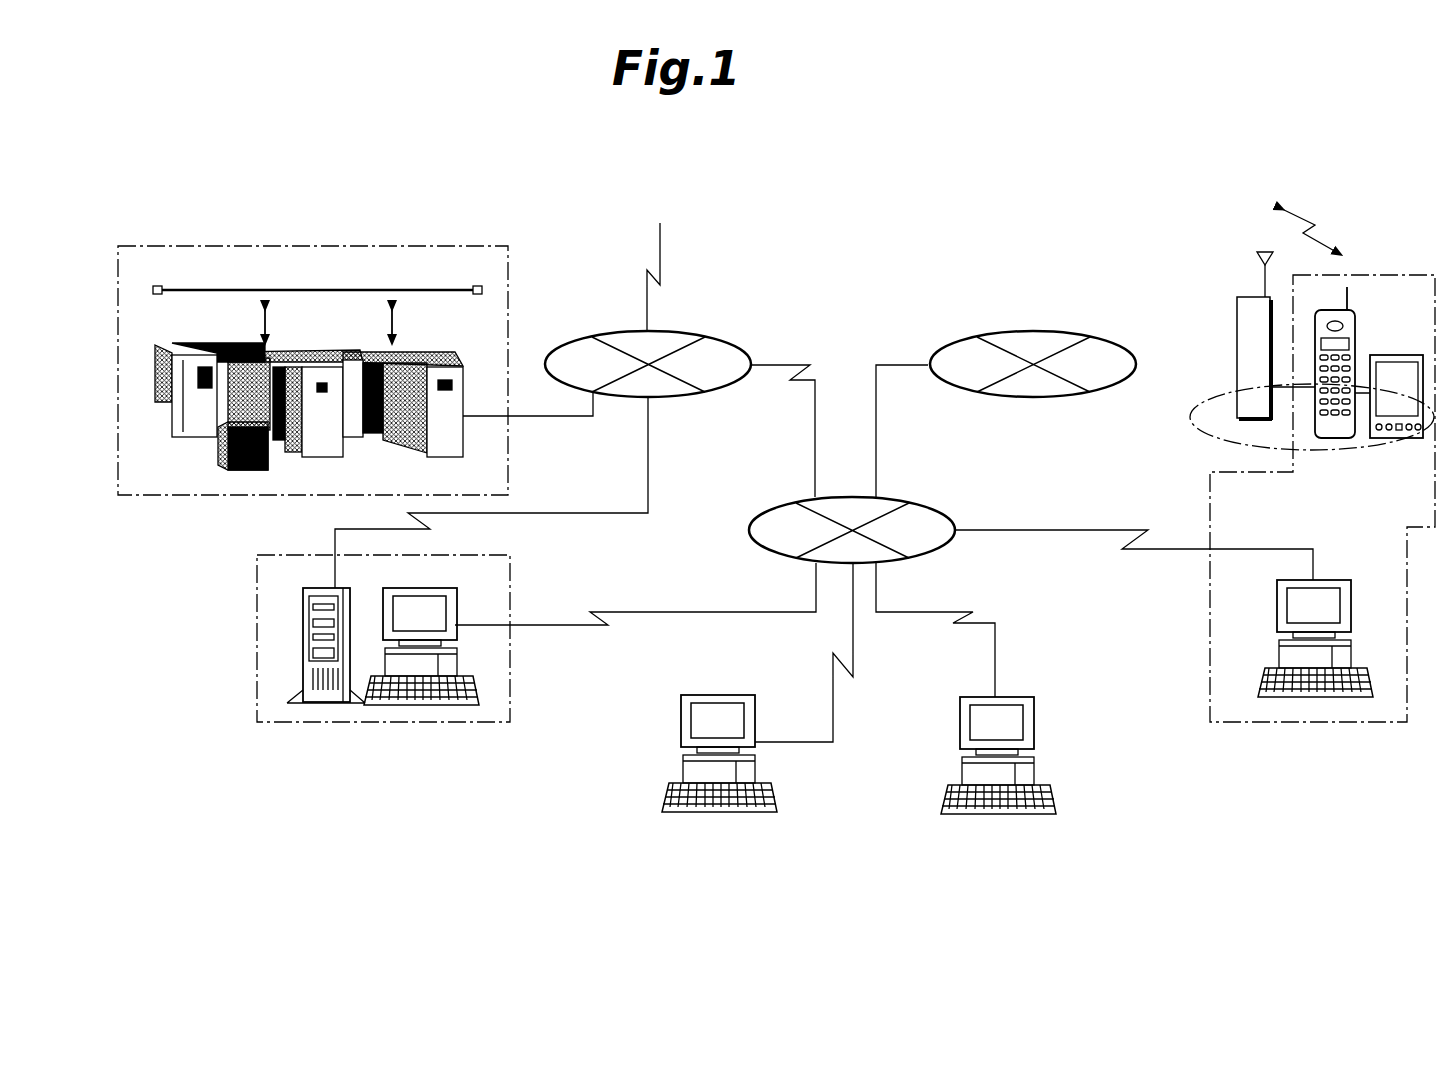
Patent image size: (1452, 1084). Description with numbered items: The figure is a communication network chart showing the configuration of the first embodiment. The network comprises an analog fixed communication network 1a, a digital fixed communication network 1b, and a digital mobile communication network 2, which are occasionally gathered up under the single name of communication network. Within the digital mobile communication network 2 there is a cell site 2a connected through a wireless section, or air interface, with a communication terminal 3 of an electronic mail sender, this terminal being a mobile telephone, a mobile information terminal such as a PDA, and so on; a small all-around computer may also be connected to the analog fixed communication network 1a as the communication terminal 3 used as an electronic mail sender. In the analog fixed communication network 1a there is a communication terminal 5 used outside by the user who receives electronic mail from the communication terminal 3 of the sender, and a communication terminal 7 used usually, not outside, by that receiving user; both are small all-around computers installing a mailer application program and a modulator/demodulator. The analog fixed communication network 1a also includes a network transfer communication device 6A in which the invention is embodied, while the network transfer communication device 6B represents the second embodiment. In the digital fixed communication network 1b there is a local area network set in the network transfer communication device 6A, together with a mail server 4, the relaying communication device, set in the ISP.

The analog fixed communication network 1a is at (938, 508).
The digital fixed communication network 1b is at (712, 335).
The digital mobile communication network 2 is at (1075, 332).
The cell site 2a is at (1237, 313).
The communication terminal 3 is at (1413, 273).
The mail server 4 is at (488, 246).
The communication terminal 5 is at (733, 695).
The network transfer communication device 6A is at (454, 635).
The network transfer communication device 6B is at (510, 598).
The communication terminal 7 is at (1037, 708).